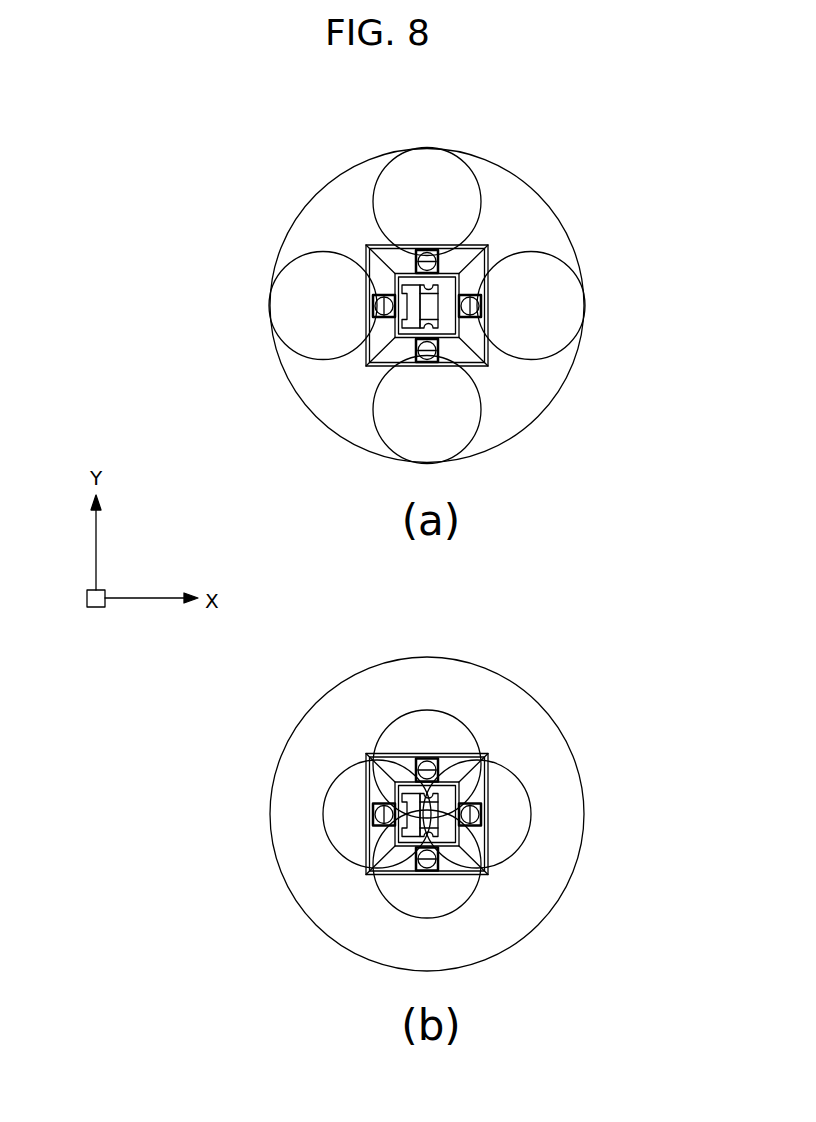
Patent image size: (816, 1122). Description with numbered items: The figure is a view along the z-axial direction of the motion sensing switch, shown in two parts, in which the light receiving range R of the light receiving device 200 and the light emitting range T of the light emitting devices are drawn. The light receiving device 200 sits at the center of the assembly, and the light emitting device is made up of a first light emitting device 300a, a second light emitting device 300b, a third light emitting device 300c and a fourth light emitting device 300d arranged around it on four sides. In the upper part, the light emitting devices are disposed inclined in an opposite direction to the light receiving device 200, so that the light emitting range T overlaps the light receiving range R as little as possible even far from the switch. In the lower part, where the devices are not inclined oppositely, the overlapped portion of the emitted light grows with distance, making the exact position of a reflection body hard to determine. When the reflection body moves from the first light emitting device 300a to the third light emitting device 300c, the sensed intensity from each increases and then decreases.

The light receiving range R is at (363, 160).
The light emitting range T is at (320, 250).
The light receiving device 200 is at (425, 303).
The first light emitting device 300a is at (427, 253).
The second light emitting device 300b is at (373, 307).
The third light emitting device 300c is at (427, 360).
The fourth light emitting device 300d is at (481, 302).